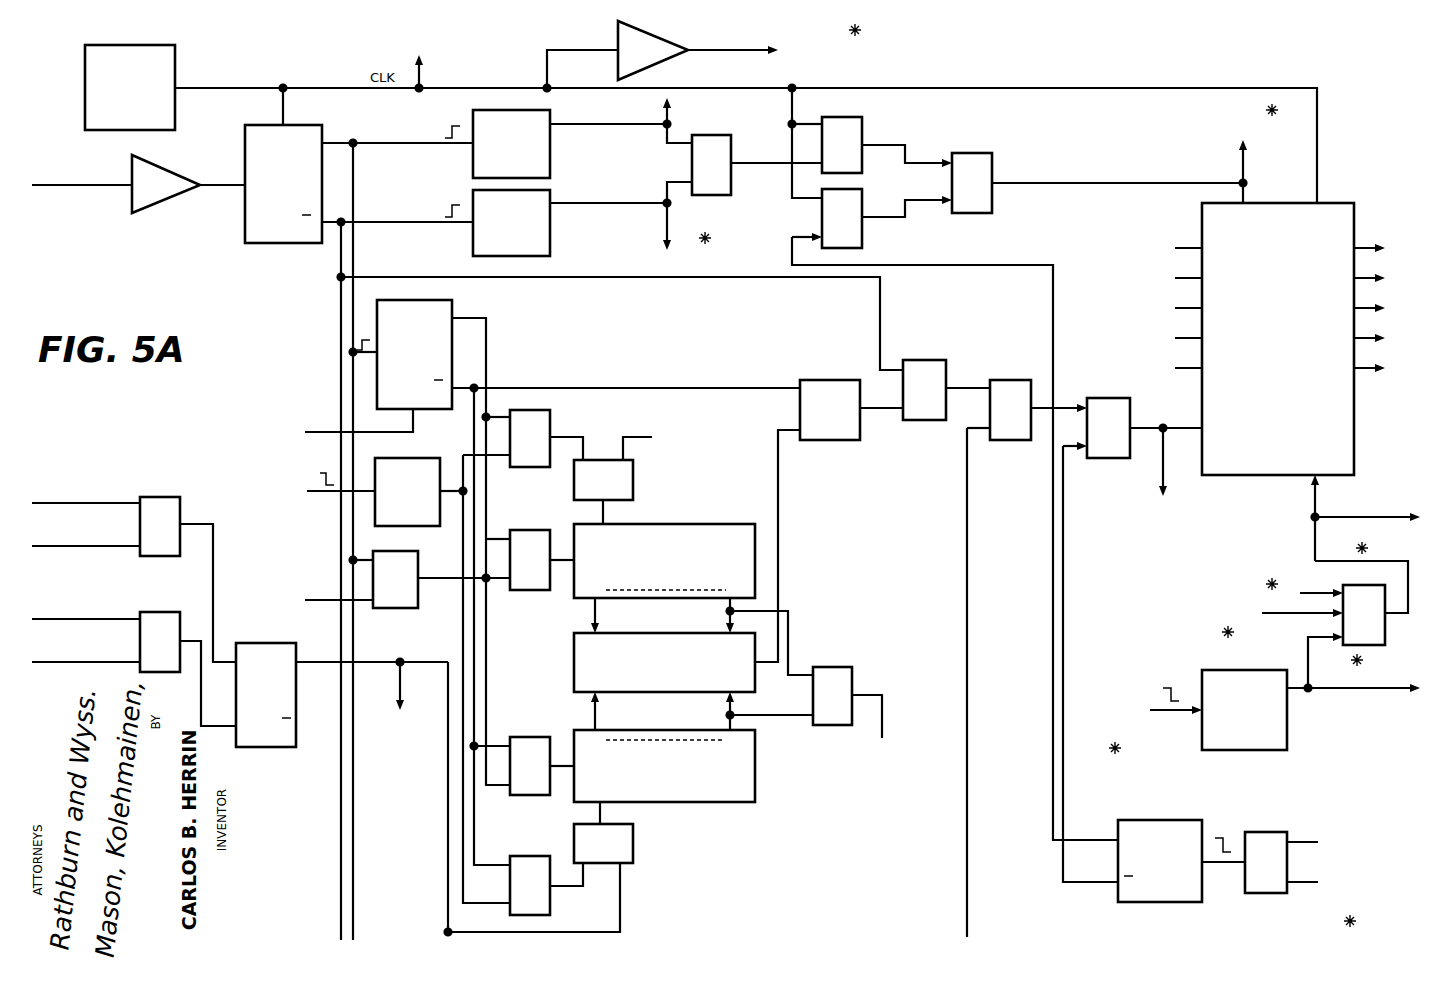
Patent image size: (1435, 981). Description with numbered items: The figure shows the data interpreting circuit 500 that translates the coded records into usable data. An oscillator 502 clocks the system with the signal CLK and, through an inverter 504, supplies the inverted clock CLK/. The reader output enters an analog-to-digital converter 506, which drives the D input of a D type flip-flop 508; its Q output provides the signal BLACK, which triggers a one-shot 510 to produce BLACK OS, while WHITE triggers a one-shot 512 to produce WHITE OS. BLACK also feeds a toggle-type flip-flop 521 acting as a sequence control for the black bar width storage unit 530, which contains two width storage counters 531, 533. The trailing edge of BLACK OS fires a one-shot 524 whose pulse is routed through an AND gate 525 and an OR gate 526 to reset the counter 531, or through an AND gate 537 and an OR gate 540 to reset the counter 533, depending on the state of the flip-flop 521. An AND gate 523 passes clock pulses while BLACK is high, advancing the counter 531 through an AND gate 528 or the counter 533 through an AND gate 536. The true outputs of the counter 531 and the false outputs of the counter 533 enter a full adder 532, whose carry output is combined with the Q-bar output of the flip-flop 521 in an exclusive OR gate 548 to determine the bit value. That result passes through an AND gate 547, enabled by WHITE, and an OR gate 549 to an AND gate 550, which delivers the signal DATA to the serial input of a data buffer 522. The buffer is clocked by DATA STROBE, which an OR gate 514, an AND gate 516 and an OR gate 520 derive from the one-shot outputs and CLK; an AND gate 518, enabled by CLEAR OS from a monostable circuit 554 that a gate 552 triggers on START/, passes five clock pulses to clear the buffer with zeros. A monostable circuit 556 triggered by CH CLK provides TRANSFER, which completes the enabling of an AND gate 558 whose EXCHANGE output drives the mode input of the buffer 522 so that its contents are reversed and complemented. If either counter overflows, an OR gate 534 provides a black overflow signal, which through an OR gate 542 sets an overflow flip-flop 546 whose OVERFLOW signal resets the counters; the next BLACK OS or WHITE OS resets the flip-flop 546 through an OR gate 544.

The data interpreting circuit 500 is at (955, 60).
The oscillator 502 is at (85, 93).
The inverter 504 is at (666, 40).
The analog-to-digital converter 506 is at (172, 196).
The D type flip-flop 508 is at (258, 243).
The one-shot 510 is at (473, 158).
The one-shot 512 is at (473, 240).
The OR gate 514 is at (720, 135).
The AND gate 516 is at (864, 120).
The AND gate 518 is at (862, 240).
The OR gate 520 is at (980, 153).
The toggle-type flip-flop 521 is at (455, 302).
The data buffer 522 is at (1354, 432).
The AND gate 523 is at (412, 608).
The one-shot 524 is at (408, 458).
The AND gate 525 is at (550, 425).
The OR gate 526 is at (633, 480).
The AND gate 528 is at (548, 515).
The black bar width storage unit 530 is at (875, 522).
The width storage counter 531 is at (650, 524).
The full adder 532 is at (574, 650).
The width storage counter 533 is at (722, 802).
The OR gate 534 is at (820, 667).
The AND gate 536 is at (545, 737).
The AND gate 537 is at (540, 856).
The OR gate 540 is at (633, 850).
The OR gate 542 is at (180, 497).
The OR gate 544 is at (183, 592).
The toggle-type flip-flop 546 is at (263, 747).
The AND gate 547 is at (942, 360).
The exclusive OR gate 548 is at (838, 380).
The OR gate 549 is at (1025, 380).
The AND gate 550 is at (1115, 458).
The gate 552 is at (1262, 893).
The monostable circuit 554 is at (1172, 902).
The monostable circuit 556 is at (1248, 750).
The AND gate 558 is at (1345, 585).